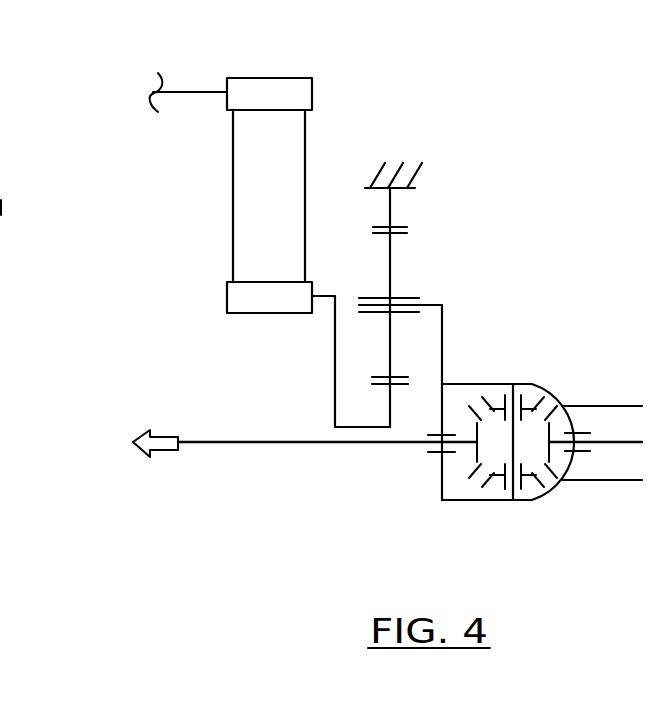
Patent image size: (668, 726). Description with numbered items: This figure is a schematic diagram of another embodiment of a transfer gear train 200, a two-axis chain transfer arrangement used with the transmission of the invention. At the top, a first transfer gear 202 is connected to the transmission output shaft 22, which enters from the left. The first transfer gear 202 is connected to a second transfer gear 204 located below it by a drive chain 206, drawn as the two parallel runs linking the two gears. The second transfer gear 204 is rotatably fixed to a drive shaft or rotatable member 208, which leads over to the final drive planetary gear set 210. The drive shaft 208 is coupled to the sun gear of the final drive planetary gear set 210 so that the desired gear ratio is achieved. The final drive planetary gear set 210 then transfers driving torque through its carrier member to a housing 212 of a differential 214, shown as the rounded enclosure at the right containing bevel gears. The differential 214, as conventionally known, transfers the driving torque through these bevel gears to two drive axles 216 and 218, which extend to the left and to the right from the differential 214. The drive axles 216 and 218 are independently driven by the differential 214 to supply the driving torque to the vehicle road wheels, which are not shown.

The transfer gear train 200 is at (541, 63).
The transmission output shaft 22 is at (188, 90).
The first transfer gear 202 is at (290, 92).
The second transfer gear 204 is at (241, 298).
The drive chain 206 is at (248, 153).
The drive shaft 208 is at (334, 393).
The final drive planetary gear set 210 is at (411, 154).
The housing 212 is at (528, 501).
The differential 214 is at (512, 516).
The drive axle 216 is at (250, 444).
The drive axle 218 is at (620, 444).